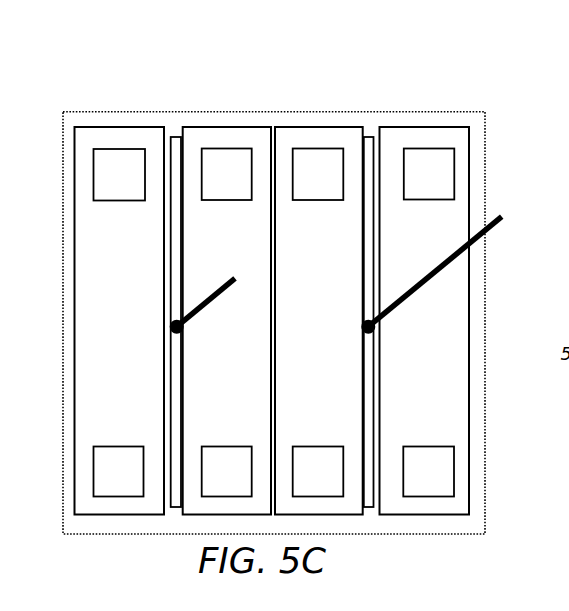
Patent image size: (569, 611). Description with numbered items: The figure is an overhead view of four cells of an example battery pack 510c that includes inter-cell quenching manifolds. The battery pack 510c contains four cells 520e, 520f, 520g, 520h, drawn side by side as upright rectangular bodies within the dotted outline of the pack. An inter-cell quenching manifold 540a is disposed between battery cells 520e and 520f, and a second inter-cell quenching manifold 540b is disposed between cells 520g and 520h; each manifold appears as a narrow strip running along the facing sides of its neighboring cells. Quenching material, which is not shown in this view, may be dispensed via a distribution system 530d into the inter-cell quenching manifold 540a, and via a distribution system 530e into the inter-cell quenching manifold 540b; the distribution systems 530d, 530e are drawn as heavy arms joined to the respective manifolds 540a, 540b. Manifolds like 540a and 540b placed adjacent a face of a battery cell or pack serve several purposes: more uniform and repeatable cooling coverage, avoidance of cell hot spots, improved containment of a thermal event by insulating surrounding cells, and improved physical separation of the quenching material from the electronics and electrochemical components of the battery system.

The battery pack 510c is at (135, 112).
The battery cell 520e is at (142, 420).
The battery cell 520f is at (247, 421).
The battery cell 520g is at (342, 421).
The battery cell 520h is at (452, 421).
The distribution system 530d is at (203, 305).
The distribution system 530e is at (497, 227).
The inter-cell quenching manifold 540a is at (177, 147).
The inter-cell quenching manifold 540b is at (368, 147).